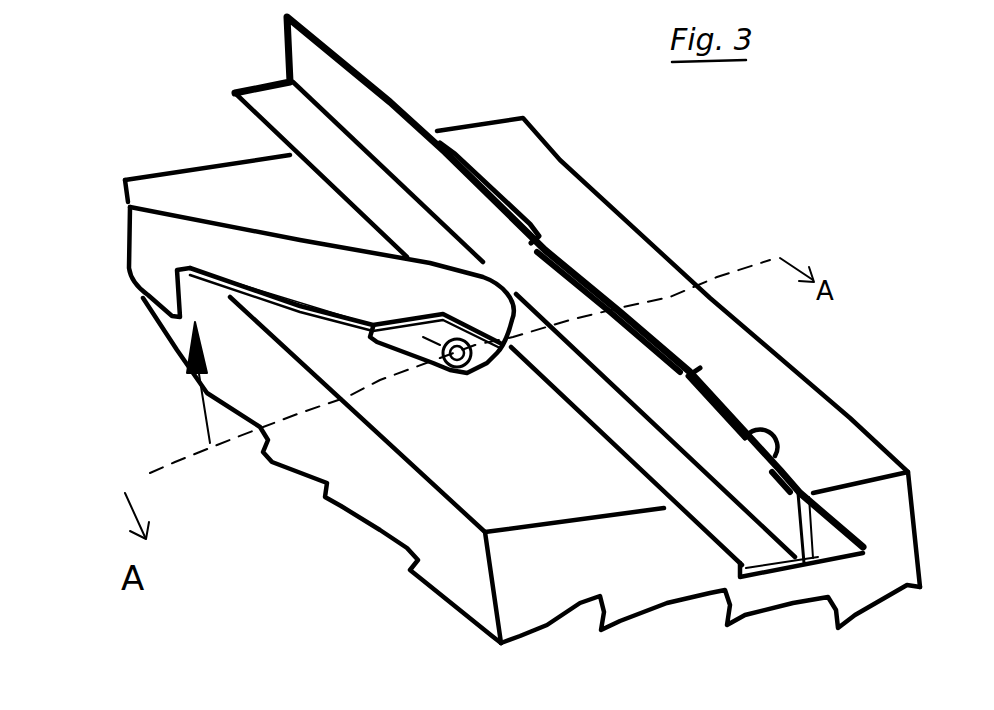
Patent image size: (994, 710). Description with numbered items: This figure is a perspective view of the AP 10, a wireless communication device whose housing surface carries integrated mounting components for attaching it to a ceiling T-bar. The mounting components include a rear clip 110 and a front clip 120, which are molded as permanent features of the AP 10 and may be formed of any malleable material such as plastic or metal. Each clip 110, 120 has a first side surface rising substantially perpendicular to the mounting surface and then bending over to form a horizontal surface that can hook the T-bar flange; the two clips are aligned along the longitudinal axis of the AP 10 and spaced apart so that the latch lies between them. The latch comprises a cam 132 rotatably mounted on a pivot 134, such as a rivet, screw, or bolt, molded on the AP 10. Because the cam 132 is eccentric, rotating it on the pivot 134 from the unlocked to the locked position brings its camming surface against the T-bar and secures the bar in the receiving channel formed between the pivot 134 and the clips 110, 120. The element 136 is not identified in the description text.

The AP 10 is at (674, 232).
The rear clip 110 is at (516, 186).
The front clip 120 is at (768, 400).
The cam 132 is at (306, 300).
The pivot 134 is at (443, 364).
The clip 136 is at (128, 267).